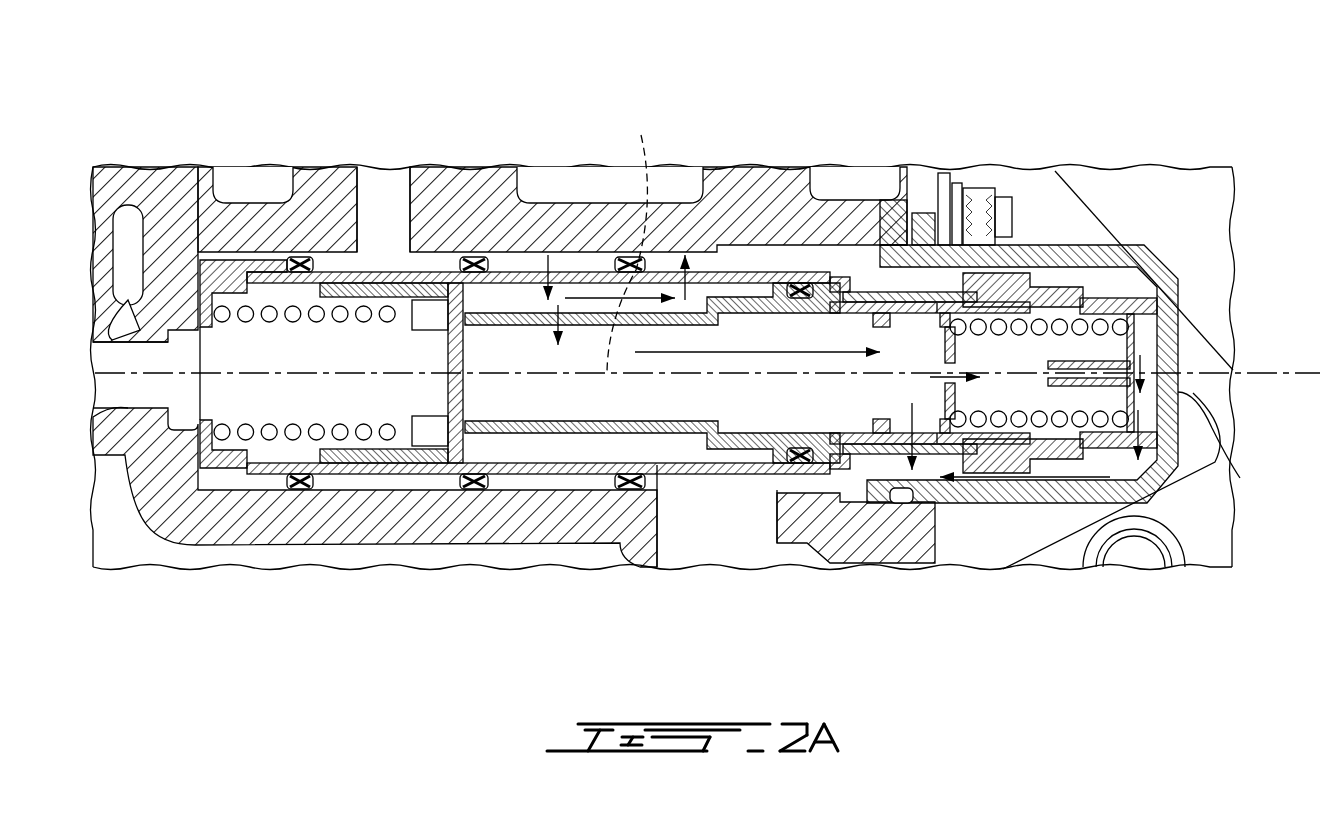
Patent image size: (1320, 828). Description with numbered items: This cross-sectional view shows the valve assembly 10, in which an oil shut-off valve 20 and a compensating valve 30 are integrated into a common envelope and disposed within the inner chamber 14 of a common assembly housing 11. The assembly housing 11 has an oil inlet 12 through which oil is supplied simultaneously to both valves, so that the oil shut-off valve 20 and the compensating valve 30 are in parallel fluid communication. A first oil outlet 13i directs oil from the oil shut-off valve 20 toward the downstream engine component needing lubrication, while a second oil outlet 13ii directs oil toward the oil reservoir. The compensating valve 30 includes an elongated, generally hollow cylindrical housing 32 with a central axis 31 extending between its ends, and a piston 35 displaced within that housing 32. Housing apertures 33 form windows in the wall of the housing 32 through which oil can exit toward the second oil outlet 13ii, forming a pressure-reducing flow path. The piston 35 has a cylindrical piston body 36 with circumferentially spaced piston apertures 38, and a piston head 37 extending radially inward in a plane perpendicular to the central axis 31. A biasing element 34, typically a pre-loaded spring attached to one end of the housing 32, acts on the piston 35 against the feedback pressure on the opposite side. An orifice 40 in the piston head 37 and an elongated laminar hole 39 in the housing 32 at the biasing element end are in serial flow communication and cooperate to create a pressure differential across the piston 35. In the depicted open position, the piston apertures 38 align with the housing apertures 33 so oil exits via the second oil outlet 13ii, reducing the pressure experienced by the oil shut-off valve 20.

The valve assembly 10 is at (590, 477).
The assembly housing 11 is at (244, 545).
The oil inlet 12 is at (566, 257).
The first oil outlet 13i is at (376, 186).
The second oil outlet 13ii is at (720, 548).
The inner chamber 14 is at (850, 290).
The oil shut-off valve 20 is at (214, 268).
The compensating valve 30 is at (897, 330).
The central axis 31 is at (634, 239).
The housing 32 is at (1000, 300).
The housing apertures 33 is at (930, 432).
The biasing element 34 is at (1078, 355).
The piston 35 is at (940, 275).
The piston body 36 is at (1039, 320).
The piston head 37 is at (940, 343).
The piston apertures 38 is at (955, 455).
The elongated hole 39 is at (1086, 356).
The orifice 40 is at (987, 420).